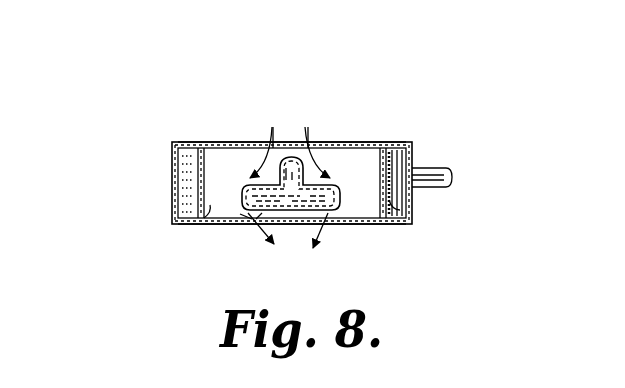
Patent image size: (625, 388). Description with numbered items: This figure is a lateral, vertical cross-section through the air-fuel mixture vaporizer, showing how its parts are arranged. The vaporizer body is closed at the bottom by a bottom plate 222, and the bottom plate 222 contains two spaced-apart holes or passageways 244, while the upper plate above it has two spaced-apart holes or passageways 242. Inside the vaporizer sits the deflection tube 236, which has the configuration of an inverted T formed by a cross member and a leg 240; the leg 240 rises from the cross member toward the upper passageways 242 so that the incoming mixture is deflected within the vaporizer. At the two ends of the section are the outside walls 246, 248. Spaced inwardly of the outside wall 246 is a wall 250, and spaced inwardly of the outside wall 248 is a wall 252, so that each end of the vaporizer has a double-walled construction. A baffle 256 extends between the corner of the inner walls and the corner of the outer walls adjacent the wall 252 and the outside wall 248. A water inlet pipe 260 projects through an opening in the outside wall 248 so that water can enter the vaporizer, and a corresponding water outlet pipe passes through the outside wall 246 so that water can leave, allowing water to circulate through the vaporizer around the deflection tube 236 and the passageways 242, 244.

The bottom plate 222 is at (230, 223).
The deflection tube 236 is at (289, 150).
The leg 240 is at (307, 142).
The holes or passageways 242 is at (252, 104).
The holes or passageways 244 is at (247, 222).
The outside wall 246 is at (172, 173).
The outside wall 248 is at (412, 152).
The wall 250 is at (205, 225).
The wall 252 is at (350, 170).
The baffle 256 is at (412, 216).
The water inlet pipe 260 is at (396, 142).